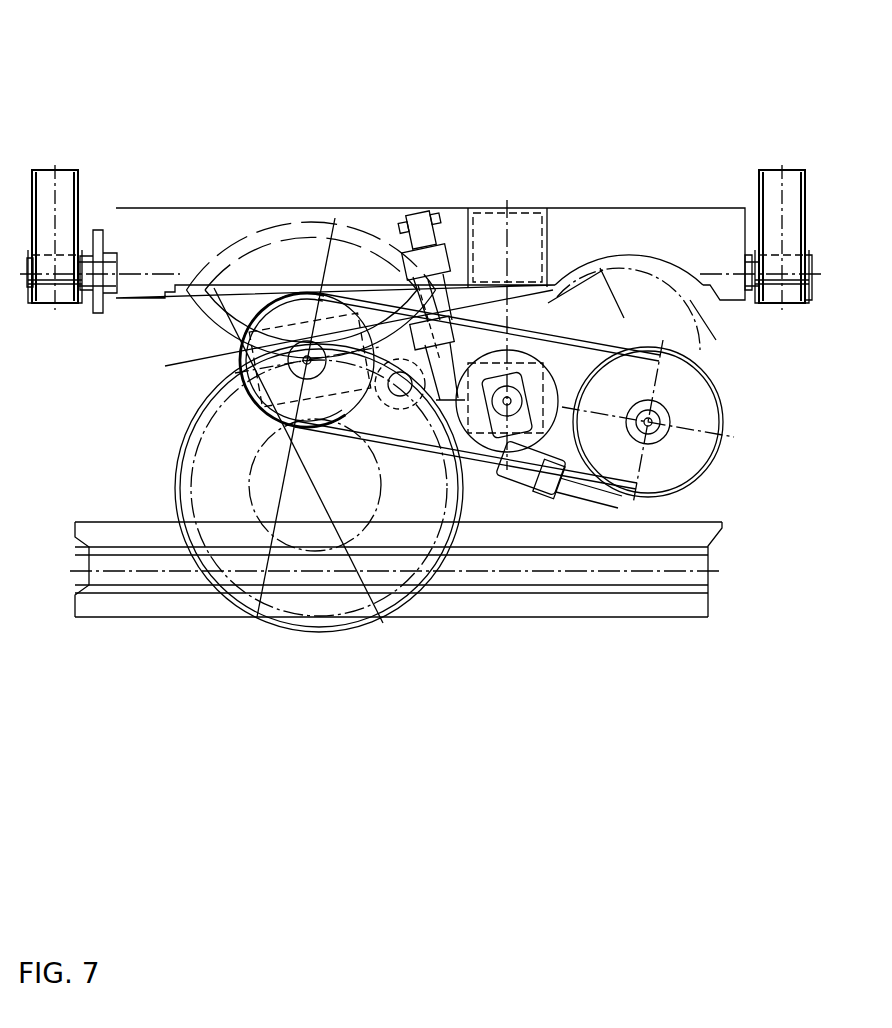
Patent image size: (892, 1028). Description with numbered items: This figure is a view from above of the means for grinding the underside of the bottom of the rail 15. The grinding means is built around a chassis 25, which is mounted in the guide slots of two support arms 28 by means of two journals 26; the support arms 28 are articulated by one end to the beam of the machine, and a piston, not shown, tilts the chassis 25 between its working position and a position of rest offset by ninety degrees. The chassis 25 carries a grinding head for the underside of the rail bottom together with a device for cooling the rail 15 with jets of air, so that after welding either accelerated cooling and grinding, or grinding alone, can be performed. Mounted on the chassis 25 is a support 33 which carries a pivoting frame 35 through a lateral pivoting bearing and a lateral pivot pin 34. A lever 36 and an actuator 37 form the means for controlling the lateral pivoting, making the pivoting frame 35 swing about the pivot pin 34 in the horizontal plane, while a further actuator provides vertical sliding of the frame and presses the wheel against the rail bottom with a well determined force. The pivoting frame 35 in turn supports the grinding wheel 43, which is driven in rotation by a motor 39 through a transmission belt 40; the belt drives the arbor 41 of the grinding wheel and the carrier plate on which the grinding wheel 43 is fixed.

The rail 15 is at (671, 605).
The chassis 25 is at (150, 243).
The journal 26 is at (26, 277).
The support arm 28 is at (62, 183).
The support 33 is at (516, 232).
The lateral pivot pin 34 is at (453, 380).
The pivoting frame 35 is at (520, 455).
The lever 36 is at (437, 250).
The actuator 37 is at (433, 260).
The motor 39 is at (677, 455).
The transmission belt 40 is at (575, 470).
The arbor 41 is at (380, 320).
The grinding wheel 43 is at (160, 370).